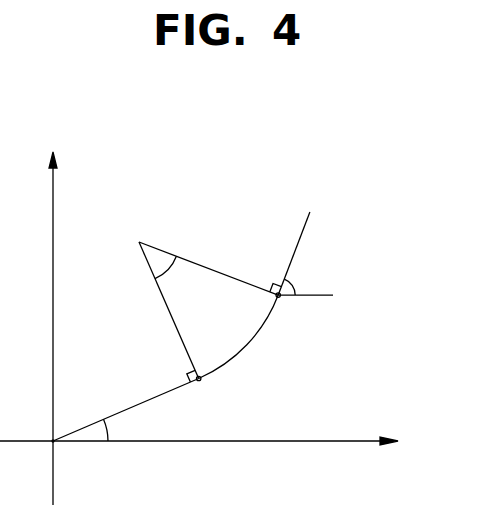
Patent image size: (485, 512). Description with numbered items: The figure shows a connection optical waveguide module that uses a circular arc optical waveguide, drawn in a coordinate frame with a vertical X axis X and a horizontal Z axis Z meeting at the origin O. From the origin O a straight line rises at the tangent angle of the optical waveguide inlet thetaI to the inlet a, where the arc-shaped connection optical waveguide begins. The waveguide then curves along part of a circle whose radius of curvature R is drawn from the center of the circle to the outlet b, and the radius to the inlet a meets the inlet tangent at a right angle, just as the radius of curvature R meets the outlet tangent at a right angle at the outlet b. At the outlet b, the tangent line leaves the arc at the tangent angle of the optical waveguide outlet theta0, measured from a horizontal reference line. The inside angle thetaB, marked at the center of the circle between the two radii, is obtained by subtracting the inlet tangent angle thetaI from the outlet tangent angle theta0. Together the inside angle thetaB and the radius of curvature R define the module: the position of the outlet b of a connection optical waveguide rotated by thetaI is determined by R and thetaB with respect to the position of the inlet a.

The X axis X is at (52, 309).
The Z axis Z is at (217, 441).
The origin O is at (37, 459).
The radius of curvature R is at (208, 268).
The inlet a is at (212, 391).
The outlet b is at (304, 323).
The inside angle thetaB is at (166, 276).
The tangent angle of the optical waveguide outlet theta0 is at (309, 281).
The tangent angle of the optical waveguide inlet thetaI is at (123, 429).